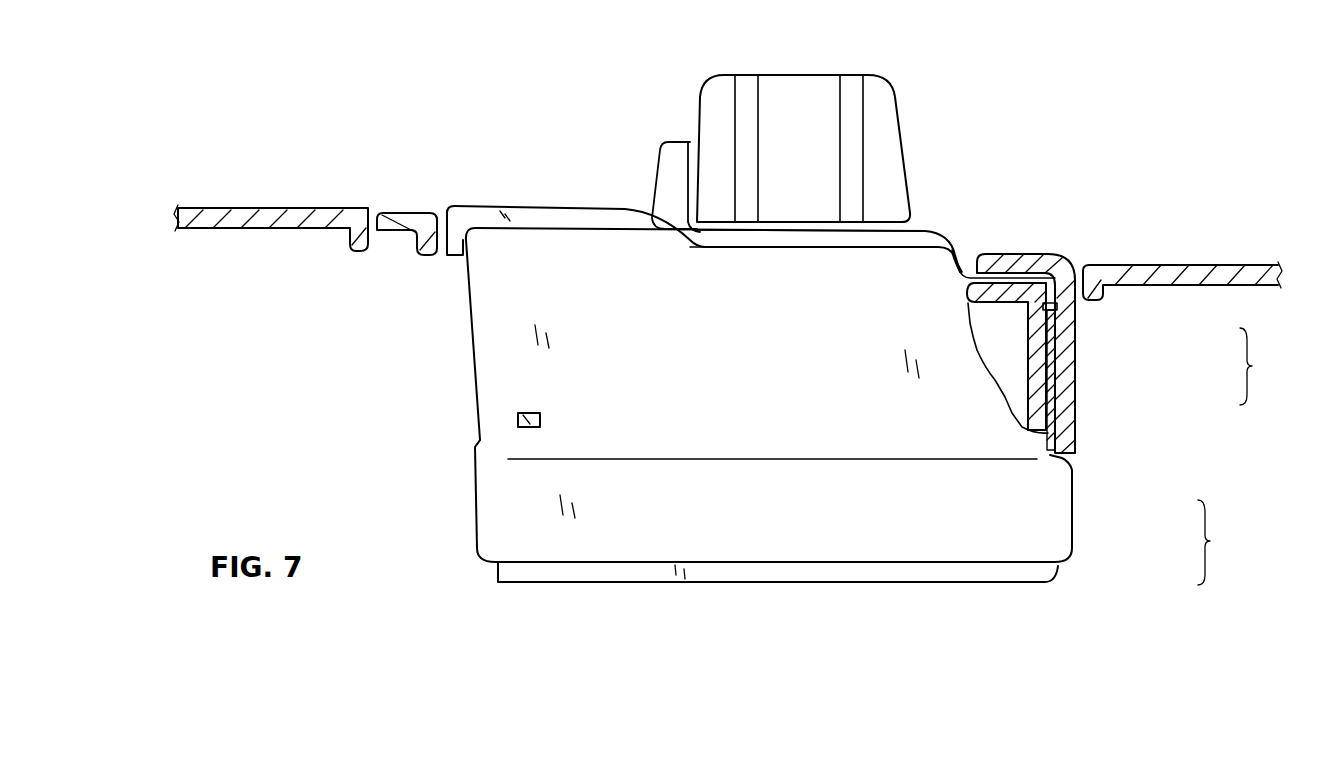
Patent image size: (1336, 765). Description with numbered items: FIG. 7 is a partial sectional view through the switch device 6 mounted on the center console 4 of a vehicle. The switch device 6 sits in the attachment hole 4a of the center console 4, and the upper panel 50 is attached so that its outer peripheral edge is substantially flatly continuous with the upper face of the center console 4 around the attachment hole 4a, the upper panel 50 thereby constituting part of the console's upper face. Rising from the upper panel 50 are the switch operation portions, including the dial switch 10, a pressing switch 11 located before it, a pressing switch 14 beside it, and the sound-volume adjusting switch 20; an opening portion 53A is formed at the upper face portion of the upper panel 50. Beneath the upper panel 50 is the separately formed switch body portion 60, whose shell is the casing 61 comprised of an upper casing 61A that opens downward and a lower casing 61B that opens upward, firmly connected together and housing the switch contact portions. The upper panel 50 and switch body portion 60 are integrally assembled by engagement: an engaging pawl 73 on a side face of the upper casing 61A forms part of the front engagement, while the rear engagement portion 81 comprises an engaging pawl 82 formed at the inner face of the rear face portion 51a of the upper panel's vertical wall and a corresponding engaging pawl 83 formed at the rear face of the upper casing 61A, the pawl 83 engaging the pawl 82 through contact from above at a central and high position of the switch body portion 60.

The center console 4 is at (210, 218).
The attachment hole 4a is at (382, 222).
The switch device 6 is at (556, 598).
The dial switch 10 is at (797, 90).
The pressing switch 11 is at (530, 215).
The pressing switch 14 is at (925, 232).
The sound-volume adjusting switch 20 is at (668, 172).
The upper panel 50 is at (1023, 252).
The rear face portion 51a is at (1078, 425).
The opening portion 53A is at (963, 262).
The switch body portion 60 is at (833, 518).
The casing 61 is at (1226, 542).
The upper casing 61A is at (1062, 510).
The lower casing 61B is at (1048, 576).
The engaging pawl 73 is at (527, 415).
The rear engagement portion 81 is at (1267, 366).
The engaging pawl 82 is at (1057, 320).
The engaging pawl 83 is at (1052, 308).